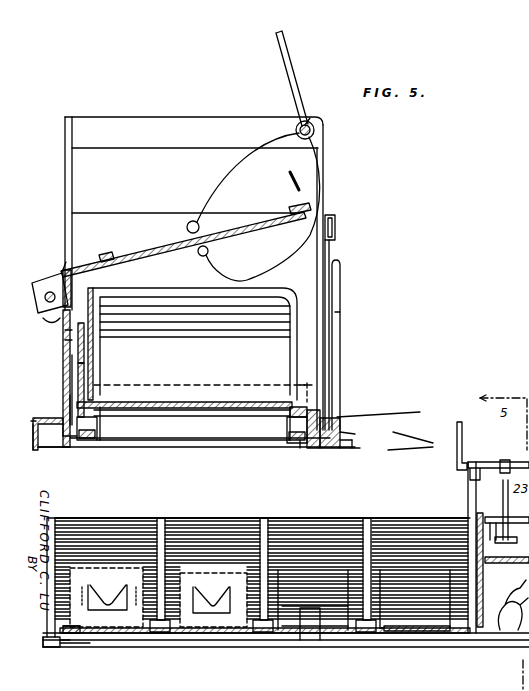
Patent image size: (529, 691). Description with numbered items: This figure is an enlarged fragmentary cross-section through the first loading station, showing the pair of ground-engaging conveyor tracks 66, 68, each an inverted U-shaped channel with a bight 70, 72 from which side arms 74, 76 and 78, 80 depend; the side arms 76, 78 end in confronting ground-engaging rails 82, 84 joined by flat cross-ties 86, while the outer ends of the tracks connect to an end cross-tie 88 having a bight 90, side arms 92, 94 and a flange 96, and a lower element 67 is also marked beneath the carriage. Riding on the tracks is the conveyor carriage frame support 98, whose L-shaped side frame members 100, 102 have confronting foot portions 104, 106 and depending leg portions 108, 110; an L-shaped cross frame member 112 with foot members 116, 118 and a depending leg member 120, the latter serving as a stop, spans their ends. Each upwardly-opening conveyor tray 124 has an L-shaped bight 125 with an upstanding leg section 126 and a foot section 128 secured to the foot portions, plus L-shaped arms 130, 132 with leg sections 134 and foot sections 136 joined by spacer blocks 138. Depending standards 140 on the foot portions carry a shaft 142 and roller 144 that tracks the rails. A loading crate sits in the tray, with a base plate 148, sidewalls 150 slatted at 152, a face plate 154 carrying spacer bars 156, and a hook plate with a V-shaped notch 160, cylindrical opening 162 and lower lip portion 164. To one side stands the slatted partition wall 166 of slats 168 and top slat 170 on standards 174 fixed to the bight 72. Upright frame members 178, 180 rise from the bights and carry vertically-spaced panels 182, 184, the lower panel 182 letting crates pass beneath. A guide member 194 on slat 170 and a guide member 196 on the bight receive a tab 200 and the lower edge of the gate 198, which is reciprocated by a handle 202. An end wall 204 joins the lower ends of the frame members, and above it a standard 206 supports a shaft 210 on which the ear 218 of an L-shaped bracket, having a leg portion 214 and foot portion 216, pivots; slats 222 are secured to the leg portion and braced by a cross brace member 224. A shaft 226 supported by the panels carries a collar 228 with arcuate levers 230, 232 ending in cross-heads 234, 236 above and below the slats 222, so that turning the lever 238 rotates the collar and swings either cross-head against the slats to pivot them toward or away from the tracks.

The conveyor track 66 is at (26, 425).
The base 67 is at (214, 452).
The conveyor track 68 is at (361, 438).
The bight 70 is at (48, 418).
The bight 72 is at (345, 448).
The side arm 74 is at (35, 440).
The side arm 76 is at (63, 446).
The side arm 78 is at (330, 448).
The side arm 80 is at (352, 449).
The ground-engaging rail 82 is at (90, 446).
The ground-engaging rail 84 is at (293, 445).
The cross-tie 86 is at (160, 640).
The end cross-tie 88 is at (64, 658).
The bight 90 is at (70, 625).
The side arm 92 is at (46, 650).
The side arm 94 is at (65, 645).
The flange 96 is at (77, 647).
The conveyor carriage frame support 98 is at (386, 645).
The side frame member 100 is at (65, 392).
The side frame member 102 is at (318, 411).
The foot portion 104 is at (96, 416).
The foot portion 106 is at (296, 406).
The leg portion 108 is at (62, 428).
The leg portion 110 is at (322, 419).
The cross frame member 112 is at (158, 448).
The foot member 116 is at (168, 416).
The foot member 118 is at (528, 648).
The leg member 120 is at (243, 440).
The conveyor tray 124 is at (318, 385).
The bight 125 is at (74, 382).
The leg section 126 is at (86, 380).
The foot section 128 is at (130, 412).
The L-shaped arm 130 is at (233, 379).
The L-shaped arm 132 is at (288, 596).
The leg section 134 is at (196, 384).
The foot section 136 is at (214, 410).
The spacer and reinforcing block 138 is at (213, 598).
The standard 140 is at (98, 430).
The shaft 142 is at (80, 440).
The roller 144 is at (87, 443).
The base plate 148 is at (250, 402).
The sidewall 150 is at (291, 335).
The slats 152 is at (300, 318).
The face plate 154 is at (66, 341).
The spacer bar 156 is at (66, 331).
The V-shaped notch 160 is at (42, 318).
The opening 162 is at (66, 353).
The lip portion 164 is at (99, 364).
The partition wall 166 is at (208, 517).
The slat 168 is at (78, 538).
The top slat 170 is at (310, 517).
The standard 174 is at (163, 520).
The frame member 178 is at (65, 238).
The frame member 180 is at (324, 153).
The panel 182 is at (123, 213).
The panel 184 is at (181, 119).
The guide member 194 is at (337, 220).
The guide member 196 is at (362, 418).
The gate 198 is at (335, 320).
The tab 200 is at (331, 255).
The handle 202 is at (339, 282).
The end wall 204 is at (68, 408).
The standard 206 is at (33, 300).
The shaft 210 is at (46, 292).
The leg portion 214 is at (100, 255).
The foot portion 216 is at (74, 293).
The ear 218 is at (61, 270).
The slat 222 is at (146, 255).
The cross brace member 224 is at (295, 208).
The shaft 226 is at (310, 120).
The collar 228 is at (317, 133).
The arcuate lever 230 is at (243, 165).
The arcuate lever 232 is at (290, 250).
The cross-head 234 is at (200, 220).
The cross-head 236 is at (209, 252).
The lever 238 is at (296, 70).